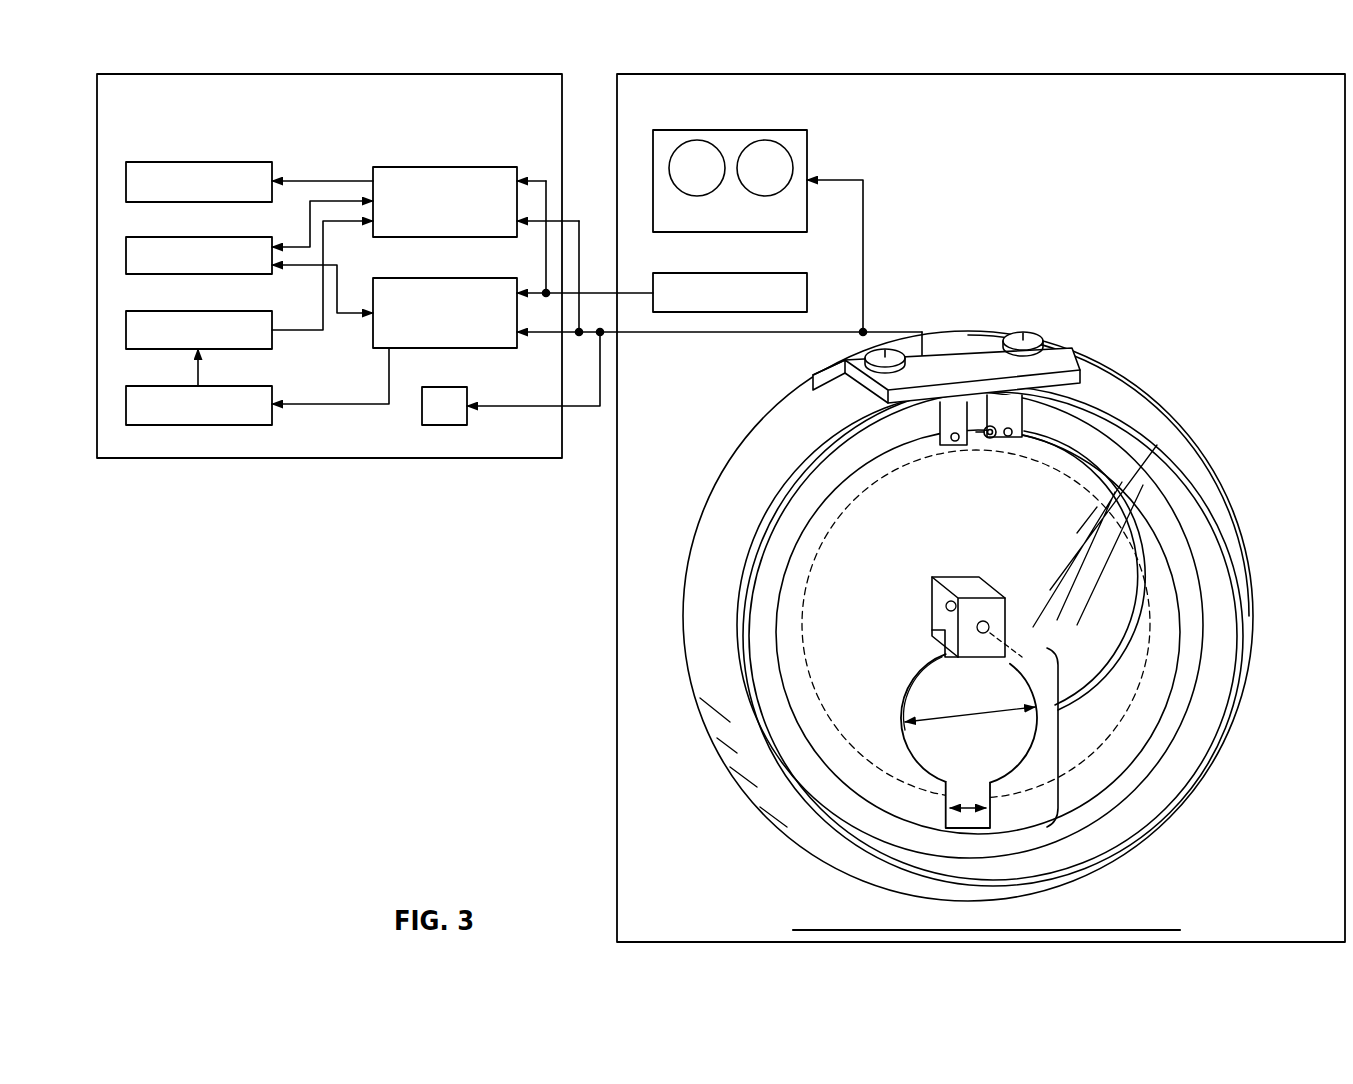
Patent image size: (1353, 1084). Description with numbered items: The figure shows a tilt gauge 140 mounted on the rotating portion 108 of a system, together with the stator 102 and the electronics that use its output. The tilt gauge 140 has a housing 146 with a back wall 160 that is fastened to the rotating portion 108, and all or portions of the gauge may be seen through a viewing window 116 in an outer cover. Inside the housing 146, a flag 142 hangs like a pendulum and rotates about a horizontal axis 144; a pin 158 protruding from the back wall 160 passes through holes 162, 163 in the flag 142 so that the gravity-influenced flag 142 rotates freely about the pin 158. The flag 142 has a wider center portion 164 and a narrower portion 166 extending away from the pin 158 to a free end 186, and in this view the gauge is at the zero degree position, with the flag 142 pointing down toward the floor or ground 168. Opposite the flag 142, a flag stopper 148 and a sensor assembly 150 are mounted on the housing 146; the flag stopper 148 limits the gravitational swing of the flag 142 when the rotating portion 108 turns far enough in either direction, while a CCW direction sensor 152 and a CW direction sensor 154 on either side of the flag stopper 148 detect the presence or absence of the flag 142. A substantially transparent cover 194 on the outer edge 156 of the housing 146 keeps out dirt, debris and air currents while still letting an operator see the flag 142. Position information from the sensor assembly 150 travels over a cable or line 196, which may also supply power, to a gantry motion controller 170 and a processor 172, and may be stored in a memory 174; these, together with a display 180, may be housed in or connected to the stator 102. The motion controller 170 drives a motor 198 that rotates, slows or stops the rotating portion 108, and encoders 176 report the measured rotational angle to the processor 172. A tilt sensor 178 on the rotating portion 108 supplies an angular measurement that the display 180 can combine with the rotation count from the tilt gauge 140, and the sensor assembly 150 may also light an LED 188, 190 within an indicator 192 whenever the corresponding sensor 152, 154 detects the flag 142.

The stator 102 is at (329, 251).
The rotating portion 108 is at (981, 493).
The viewing window 116 is at (1070, 624).
The tilt gauge 140 is at (978, 527).
The flag 142 is at (969, 718).
The horizontal axis 144 is at (1005, 669).
The housing 146 is at (941, 616).
The flag stopper 148 is at (988, 471).
The sensor assembly 150 is at (946, 348).
The CCW direction sensor 152 is at (809, 423).
The CW direction sensor 154 is at (1102, 409).
The outer edge 156 is at (1125, 475).
The pin 158 is at (918, 625).
The back wall 160 is at (918, 617).
The hole 162 is at (790, 666).
The hole 163 is at (1154, 649).
The wider center portion 164 is at (970, 702).
The narrower portion 166 is at (1011, 855).
The floor or ground 168 is at (986, 915).
The gantry motion controller 170 is at (445, 299).
The processor 172 is at (445, 187).
The memory 174 is at (199, 240).
The encoders 176 is at (199, 316).
The tilt sensor 178 is at (730, 276).
The display 180 is at (199, 167).
The free end 186 is at (1095, 781).
The LED 188 is at (693, 138).
The LED 190 is at (762, 138).
The indicator 192 is at (639, 274).
The transparent cover 194 is at (1016, 636).
The cable or line 196 is at (719, 348).
The motor 198 is at (199, 392).